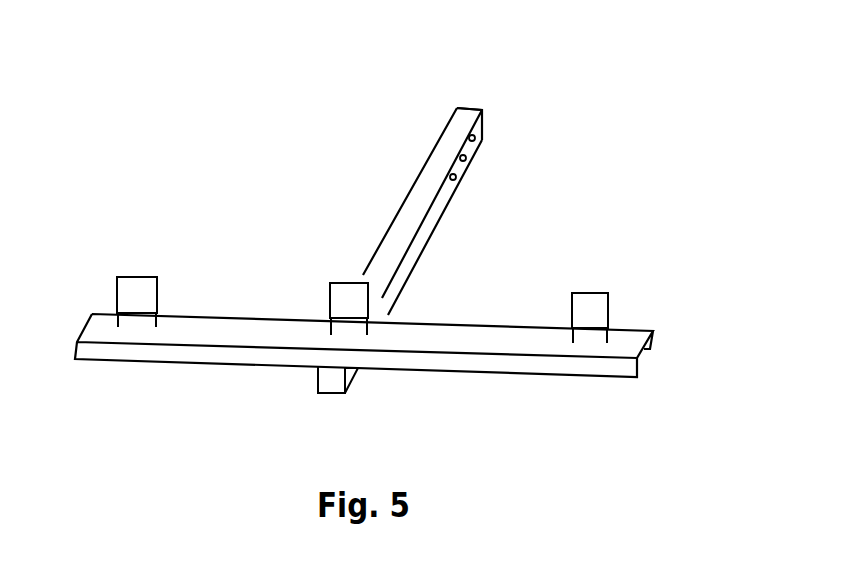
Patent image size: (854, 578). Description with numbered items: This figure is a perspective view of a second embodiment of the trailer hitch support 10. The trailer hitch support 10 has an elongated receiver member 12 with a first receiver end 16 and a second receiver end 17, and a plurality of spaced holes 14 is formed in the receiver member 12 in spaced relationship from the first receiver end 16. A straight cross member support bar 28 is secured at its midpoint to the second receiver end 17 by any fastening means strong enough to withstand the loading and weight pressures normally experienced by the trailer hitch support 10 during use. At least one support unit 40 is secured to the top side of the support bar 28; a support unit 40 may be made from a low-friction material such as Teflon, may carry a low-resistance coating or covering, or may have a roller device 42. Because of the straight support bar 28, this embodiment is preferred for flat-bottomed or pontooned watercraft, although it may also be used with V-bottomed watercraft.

The trailer hitch support 10 is at (219, 103).
The elongated receiver member 12 is at (426, 178).
The plurality of spaced holes 14 is at (475, 138).
The first receiver end 16 is at (473, 102).
The second receiver end 17 is at (332, 377).
The straight cross member support bar 28 is at (185, 352).
The support unit 40 is at (98, 280).
The roller device 42 is at (588, 290).